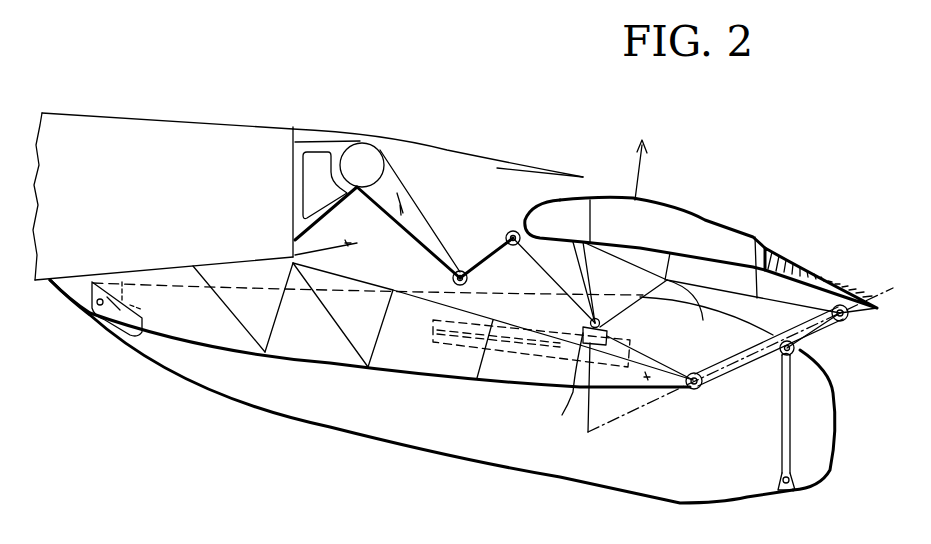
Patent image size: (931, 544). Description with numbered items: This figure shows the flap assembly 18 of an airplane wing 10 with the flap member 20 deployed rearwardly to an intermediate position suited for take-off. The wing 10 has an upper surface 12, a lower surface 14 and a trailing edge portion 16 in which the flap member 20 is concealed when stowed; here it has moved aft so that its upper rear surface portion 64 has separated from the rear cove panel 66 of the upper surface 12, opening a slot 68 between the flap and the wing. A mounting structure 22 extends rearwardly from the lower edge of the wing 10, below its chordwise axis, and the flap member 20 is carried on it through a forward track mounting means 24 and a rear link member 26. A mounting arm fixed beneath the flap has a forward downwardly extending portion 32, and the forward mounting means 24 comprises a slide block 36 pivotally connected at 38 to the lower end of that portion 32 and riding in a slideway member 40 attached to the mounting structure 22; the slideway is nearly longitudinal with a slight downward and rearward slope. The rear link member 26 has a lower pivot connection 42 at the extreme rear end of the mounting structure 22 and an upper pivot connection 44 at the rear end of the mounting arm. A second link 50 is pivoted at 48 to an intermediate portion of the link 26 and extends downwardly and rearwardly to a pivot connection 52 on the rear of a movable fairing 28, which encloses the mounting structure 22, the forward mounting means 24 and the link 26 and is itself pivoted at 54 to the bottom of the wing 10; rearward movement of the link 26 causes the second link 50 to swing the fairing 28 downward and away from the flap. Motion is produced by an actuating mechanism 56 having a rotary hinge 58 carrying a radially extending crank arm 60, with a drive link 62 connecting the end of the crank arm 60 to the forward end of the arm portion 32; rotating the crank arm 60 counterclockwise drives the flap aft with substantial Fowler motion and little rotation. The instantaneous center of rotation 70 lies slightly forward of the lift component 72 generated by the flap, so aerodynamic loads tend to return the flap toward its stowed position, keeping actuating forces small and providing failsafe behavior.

The airplane wing 10 is at (273, 75).
The upper surface 12 is at (238, 126).
The lower surface 14 is at (227, 268).
The trailing edge portion 16 is at (458, 150).
The flap assembly 18 is at (858, 379).
The flap member 20 is at (718, 228).
The mounting structure 22 is at (418, 367).
The forward track mounting means 24 is at (620, 318).
The rear link member 26 is at (752, 372).
The movable fairing 28 is at (560, 478).
The forward downwardly extending portion 32 is at (706, 313).
The slide block 36 is at (368, 359).
The pivot connection 38 is at (589, 320).
The slideway member 40 is at (620, 334).
The lower pivot connection 42 is at (694, 390).
The upper pivot connection 44 is at (849, 315).
The pivot connection 48 is at (795, 350).
The second link 50 is at (795, 440).
The pivot connection 52 is at (793, 493).
The pivot connection 54 is at (92, 316).
The actuating mechanism 56 is at (275, 179).
The rotary hinge 58 is at (376, 155).
The crank arm 60 is at (405, 208).
The drive link 62 is at (493, 253).
The upper rear surface portion 64 is at (808, 268).
The rear cove panel 66 is at (505, 165).
The slot 68 is at (577, 190).
The instantaneous center of rotation 70 is at (588, 432).
The lift component 72 is at (645, 170).